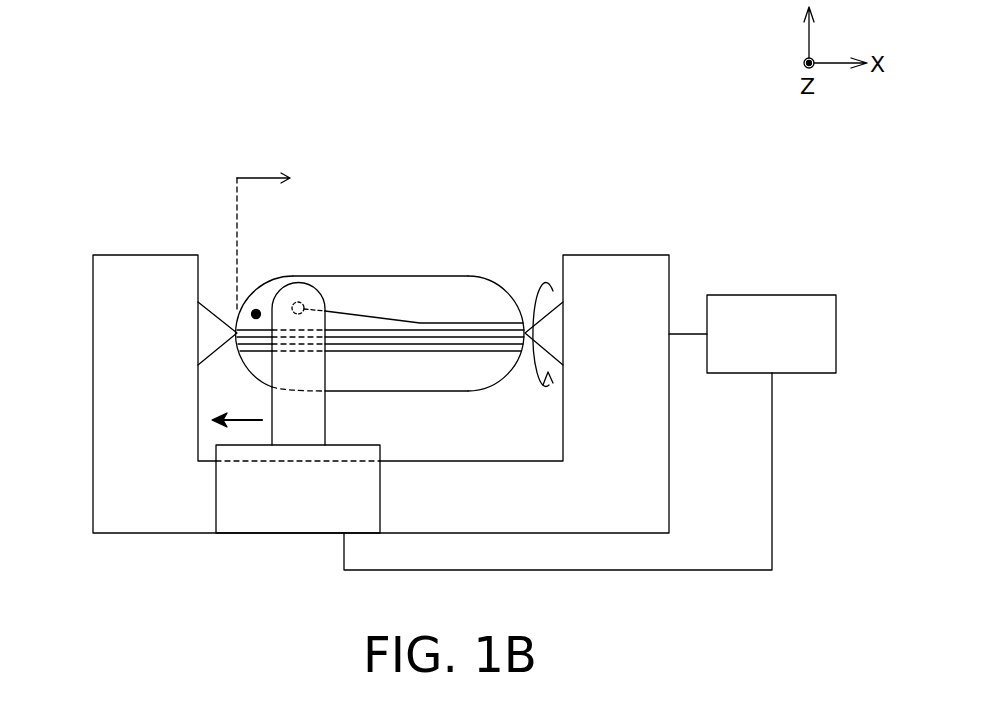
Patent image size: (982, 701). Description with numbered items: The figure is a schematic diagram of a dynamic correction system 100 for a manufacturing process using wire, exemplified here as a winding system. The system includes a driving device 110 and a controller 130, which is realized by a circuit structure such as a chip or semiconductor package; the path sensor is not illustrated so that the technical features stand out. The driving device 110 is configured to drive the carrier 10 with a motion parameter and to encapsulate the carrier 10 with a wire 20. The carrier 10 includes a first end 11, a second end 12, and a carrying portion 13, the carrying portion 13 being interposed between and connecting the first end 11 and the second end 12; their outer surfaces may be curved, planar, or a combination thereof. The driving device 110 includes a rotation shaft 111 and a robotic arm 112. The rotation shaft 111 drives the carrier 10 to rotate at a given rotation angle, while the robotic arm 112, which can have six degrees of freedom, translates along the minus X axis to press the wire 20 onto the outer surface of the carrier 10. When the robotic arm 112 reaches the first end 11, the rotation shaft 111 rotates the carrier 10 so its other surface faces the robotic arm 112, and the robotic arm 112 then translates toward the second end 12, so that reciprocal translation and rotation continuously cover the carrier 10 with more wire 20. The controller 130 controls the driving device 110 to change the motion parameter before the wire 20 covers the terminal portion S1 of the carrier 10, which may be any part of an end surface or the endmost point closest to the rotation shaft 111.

The dynamic correction system 100 is at (240, 60).
The driving device 110 is at (130, 197).
The rotation shaft 111 is at (212, 328).
The robotic arm 112 is at (326, 414).
The carrier 10 is at (372, 165).
The first end 11 is at (254, 302).
The carrying portion 13 is at (438, 276).
The second end 12 is at (503, 287).
The wire 20 is at (363, 313).
The terminal portion S1 is at (256, 311).
The controller 130 is at (750, 362).